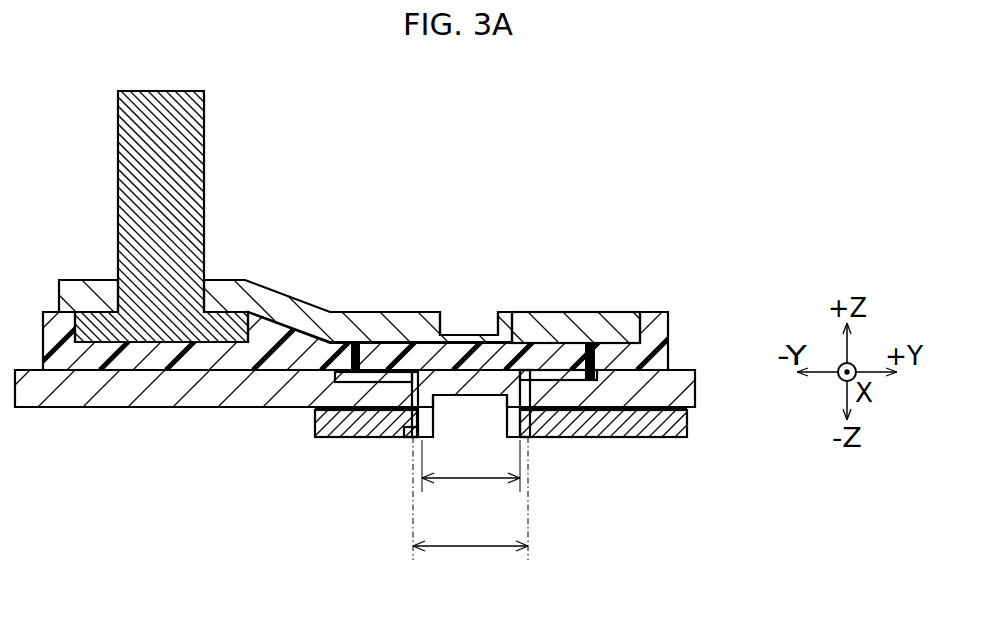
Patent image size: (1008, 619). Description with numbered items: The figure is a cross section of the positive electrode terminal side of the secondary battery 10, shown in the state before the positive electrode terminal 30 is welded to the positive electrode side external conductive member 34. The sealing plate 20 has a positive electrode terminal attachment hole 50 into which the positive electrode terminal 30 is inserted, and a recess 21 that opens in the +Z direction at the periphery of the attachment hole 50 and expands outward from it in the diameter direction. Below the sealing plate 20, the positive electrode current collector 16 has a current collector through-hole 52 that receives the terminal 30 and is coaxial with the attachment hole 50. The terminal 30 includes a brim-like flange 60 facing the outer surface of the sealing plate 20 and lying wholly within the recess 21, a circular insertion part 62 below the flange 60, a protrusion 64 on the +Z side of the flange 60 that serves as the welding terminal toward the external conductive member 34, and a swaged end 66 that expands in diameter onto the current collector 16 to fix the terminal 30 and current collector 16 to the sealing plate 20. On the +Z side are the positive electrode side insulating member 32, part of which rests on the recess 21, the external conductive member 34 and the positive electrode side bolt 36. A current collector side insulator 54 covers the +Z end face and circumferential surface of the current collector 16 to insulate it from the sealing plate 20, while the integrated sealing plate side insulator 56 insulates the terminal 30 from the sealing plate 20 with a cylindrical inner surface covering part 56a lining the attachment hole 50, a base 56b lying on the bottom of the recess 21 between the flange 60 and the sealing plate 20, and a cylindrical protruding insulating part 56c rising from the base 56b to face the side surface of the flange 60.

The secondary battery 10 is at (667, 235).
The positive electrode current collector 16 is at (622, 430).
The sealing plate 20 is at (683, 390).
The recess 21 is at (590, 345).
The positive electrode terminal 30 is at (505, 237).
The positive electrode side insulating member 32 is at (659, 343).
The positive electrode side external conductive member 34 is at (320, 317).
The positive electrode side bolt 36 is at (117, 178).
The positive electrode terminal attachment hole 50 is at (470, 549).
The current collector through-hole 52 is at (470, 481).
The current collector side insulator 54 is at (313, 430).
The sealing plate side insulator 56 is at (343, 438).
The inner surface covering part 56a is at (466, 418).
The base 56b is at (395, 372).
The protruding insulating part 56c is at (355, 343).
The flange 60 is at (458, 333).
The insertion part 62 is at (490, 333).
The protrusion 64 is at (511, 313).
The end 66 is at (411, 438).